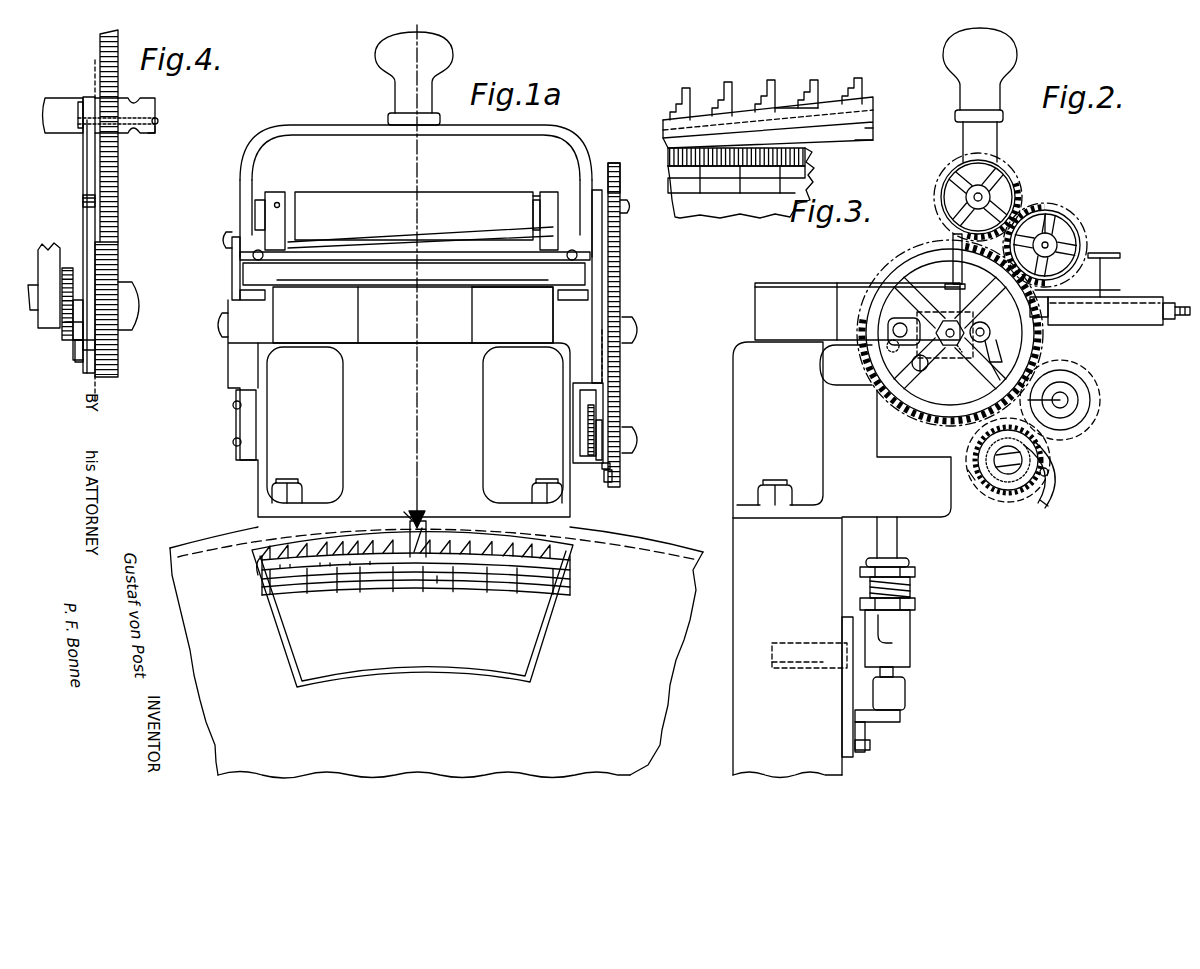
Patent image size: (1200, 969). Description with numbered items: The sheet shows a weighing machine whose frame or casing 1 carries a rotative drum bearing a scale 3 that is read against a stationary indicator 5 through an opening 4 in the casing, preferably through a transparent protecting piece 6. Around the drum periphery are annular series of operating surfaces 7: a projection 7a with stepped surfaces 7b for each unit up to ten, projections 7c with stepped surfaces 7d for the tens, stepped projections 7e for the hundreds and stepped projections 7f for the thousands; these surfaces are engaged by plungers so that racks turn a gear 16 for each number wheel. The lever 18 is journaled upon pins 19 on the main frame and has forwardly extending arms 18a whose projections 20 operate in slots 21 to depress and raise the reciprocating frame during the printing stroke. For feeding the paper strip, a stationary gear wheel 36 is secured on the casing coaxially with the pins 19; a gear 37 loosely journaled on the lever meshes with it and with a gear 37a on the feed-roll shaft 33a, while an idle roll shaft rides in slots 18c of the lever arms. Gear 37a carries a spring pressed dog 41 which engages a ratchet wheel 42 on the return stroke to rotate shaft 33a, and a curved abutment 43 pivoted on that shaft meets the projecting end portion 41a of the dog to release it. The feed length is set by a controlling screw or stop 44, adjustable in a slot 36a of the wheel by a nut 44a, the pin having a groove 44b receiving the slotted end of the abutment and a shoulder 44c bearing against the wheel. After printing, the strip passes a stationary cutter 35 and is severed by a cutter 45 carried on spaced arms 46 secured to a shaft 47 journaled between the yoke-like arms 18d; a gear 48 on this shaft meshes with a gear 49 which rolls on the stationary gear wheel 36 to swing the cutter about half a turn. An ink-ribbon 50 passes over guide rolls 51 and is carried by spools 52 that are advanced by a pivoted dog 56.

In FIG. 1A, the frame or casing 1 is at (620, 600).
In FIG. 2, the frame or casing 1 is at (740, 628).
In FIG. 1A, the scale 3 is at (385, 580).
In FIG. 3, the scale 3 is at (682, 198).
In FIG. 1A, the opening 4 is at (540, 650).
In FIG. 4, the stationary indicator 5 is at (130, 34).
In FIG. 1A, the stationary indicator 5 is at (408, 512).
In FIG. 1A, the transparent protecting piece 6 is at (377, 338).
In FIG. 1A, the operating surfaces 7 is at (570, 550).
In FIG. 3, the operating surfaces 7 is at (781, 112).
In FIG. 1A, the projection 7a is at (432, 530).
In FIG. 3, the projection 7a is at (700, 84).
In FIG. 1A, the stepped surfaces 7b is at (260, 560).
In FIG. 3, the stepped surfaces 7b is at (676, 95).
In FIG. 1A, the projections 7c is at (443, 578).
In FIG. 3, the projections 7c is at (838, 106).
In FIG. 3, the stepped surfaces 7d is at (818, 102).
In FIG. 3, the stepped projections 7e is at (876, 128).
In FIG. 3, the stepped projections 7f is at (866, 142).
In FIG. 2, the gear 16 is at (945, 536).
In FIG. 1A, the lever 18 is at (450, 135).
In FIG. 2, the lever 18 is at (1000, 140).
In FIG. 1A, the forwardly extending arms 18a is at (244, 182).
In FIG. 2, the slots 18c is at (1050, 216).
In FIG. 1A, the yoke-like arms 18d is at (574, 152).
In FIG. 1A, the pins 19 is at (218, 325).
In FIG. 2, the pins 19 is at (950, 350).
In FIG. 2, the projections 20 is at (900, 342).
In FIG. 2, the slots 21 is at (922, 338).
In FIG. 4, the shaft 33a is at (68, 292).
In FIG. 1A, the shaft 33a is at (242, 450).
In FIG. 2, the shaft 33a is at (968, 478).
In FIG. 1A, the stationary cutter 35 is at (334, 273).
In FIG. 4, the stationary gear wheel 36 is at (120, 158).
In FIG. 1A, the stationary gear wheel 36 is at (629, 382).
In FIG. 2, the stationary gear wheel 36 is at (900, 270).
In FIG. 2, the slot 36a is at (1006, 366).
In FIG. 2, the gear 37 is at (1068, 372).
In FIG. 4, the gear 37a is at (115, 358).
In FIG. 1A, the gear 37a is at (612, 486).
In FIG. 2, the gear 37a is at (1056, 484).
In FIG. 4, the spring pressed dog 41 is at (60, 346).
In FIG. 1A, the spring pressed dog 41 is at (600, 466).
In FIG. 2, the spring pressed dog 41 is at (1042, 462).
In FIG. 2, the projecting end portion 41a is at (1050, 473).
In FIG. 4, the ratchet wheel 42 is at (68, 262).
In FIG. 1A, the ratchet wheel 42 is at (588, 470).
In FIG. 2, the ratchet wheel 42 is at (1020, 490).
In FIG. 4, the abutment 43 is at (83, 197).
In FIG. 2, the abutment 43 is at (962, 360).
In FIG. 4, the controlling screw or stop 44 is at (150, 116).
In FIG. 2, the controlling screw or stop 44 is at (992, 332).
In FIG. 4, the nut 44a is at (152, 128).
In FIG. 4, the groove 44b is at (85, 118).
In FIG. 4, the shoulder 44c is at (94, 125).
In FIG. 1A, the cutter 45 is at (496, 238).
In FIG. 1A, the spaced arms 46 is at (280, 229).
In FIG. 1A, the shaft 47 is at (533, 194).
In FIG. 2, the shaft 47 is at (1008, 182).
In FIG. 1A, the gear 48 is at (624, 167).
In FIG. 2, the gear 48 is at (938, 190).
In FIG. 2, the gear 49 is at (1082, 232).
In FIG. 1A, the ink-ribbon 50 is at (512, 315).
In FIG. 2, the ink-ribbon 50 is at (953, 268).
In FIG. 1A, the guide rolls 51 is at (250, 258).
In FIG. 2, the spools 52 is at (1110, 253).
In FIG. 2, the dog 56 is at (1160, 290).